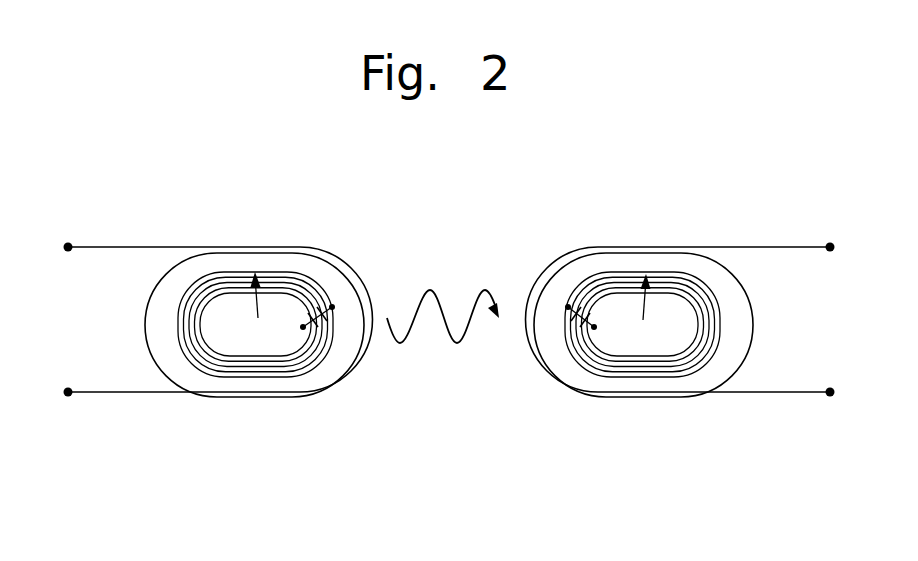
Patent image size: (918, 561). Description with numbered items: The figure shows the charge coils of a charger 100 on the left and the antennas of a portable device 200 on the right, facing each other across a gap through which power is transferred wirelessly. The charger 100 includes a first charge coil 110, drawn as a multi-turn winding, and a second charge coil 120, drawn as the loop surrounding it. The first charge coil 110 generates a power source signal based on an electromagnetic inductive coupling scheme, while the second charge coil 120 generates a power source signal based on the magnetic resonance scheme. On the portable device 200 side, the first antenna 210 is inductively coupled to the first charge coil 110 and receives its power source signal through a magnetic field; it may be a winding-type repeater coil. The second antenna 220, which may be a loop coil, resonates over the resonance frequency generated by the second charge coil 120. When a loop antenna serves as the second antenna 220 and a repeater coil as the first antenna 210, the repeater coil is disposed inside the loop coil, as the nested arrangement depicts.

The charger 100 is at (231, 516).
The first charge coil 110 is at (254, 377).
The second charge coil 120 is at (259, 246).
The portable device 200 is at (713, 516).
The first antenna 210 is at (643, 377).
The second antenna 220 is at (645, 246).